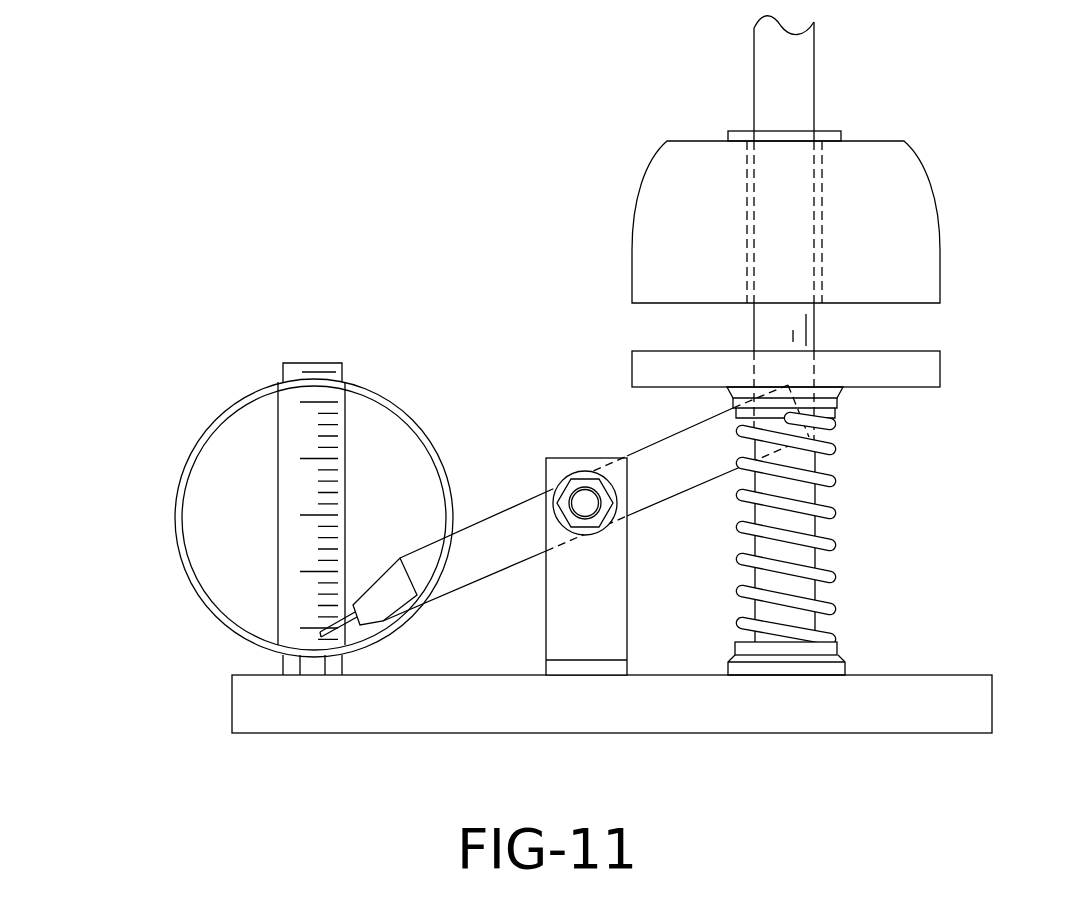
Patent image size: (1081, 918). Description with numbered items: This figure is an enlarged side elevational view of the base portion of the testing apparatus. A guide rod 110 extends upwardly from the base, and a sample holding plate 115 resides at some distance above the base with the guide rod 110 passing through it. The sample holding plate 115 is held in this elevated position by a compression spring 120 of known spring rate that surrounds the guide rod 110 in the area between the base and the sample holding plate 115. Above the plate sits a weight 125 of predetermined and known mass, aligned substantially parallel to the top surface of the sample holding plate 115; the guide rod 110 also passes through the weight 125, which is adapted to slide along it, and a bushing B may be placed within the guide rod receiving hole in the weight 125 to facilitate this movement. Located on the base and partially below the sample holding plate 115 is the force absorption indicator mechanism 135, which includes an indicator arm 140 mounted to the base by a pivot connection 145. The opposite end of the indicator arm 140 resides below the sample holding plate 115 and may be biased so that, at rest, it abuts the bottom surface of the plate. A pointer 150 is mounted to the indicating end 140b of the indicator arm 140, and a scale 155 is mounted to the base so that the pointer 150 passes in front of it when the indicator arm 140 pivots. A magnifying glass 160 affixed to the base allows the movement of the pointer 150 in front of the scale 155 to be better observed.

The guide rod 110 is at (773, 88).
The bushing B is at (830, 132).
The weight 125 is at (917, 211).
The sample holding plate 115 is at (922, 365).
The compression spring 120 is at (813, 547).
The force absorption indicator mechanism 135 is at (485, 366).
The indicator arm 140 is at (508, 530).
The indicating end 140b is at (383, 605).
The pivot connection 145 is at (583, 497).
The pointer 150 is at (320, 628).
The scale 155 is at (292, 430).
The magnifying glass 160 is at (176, 498).